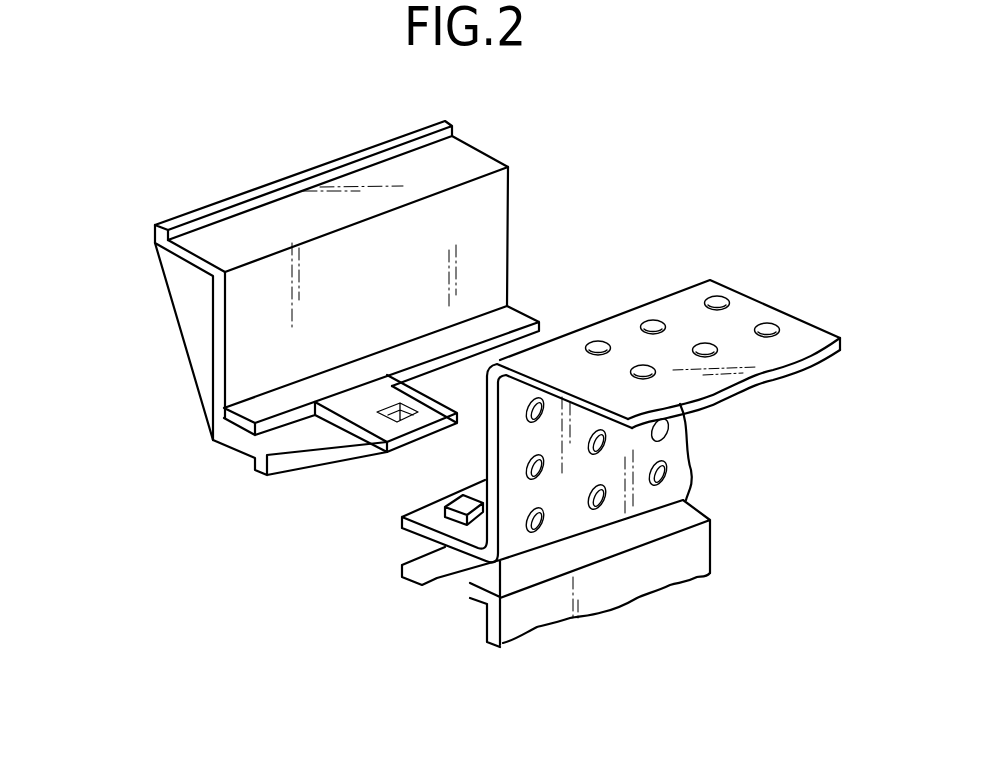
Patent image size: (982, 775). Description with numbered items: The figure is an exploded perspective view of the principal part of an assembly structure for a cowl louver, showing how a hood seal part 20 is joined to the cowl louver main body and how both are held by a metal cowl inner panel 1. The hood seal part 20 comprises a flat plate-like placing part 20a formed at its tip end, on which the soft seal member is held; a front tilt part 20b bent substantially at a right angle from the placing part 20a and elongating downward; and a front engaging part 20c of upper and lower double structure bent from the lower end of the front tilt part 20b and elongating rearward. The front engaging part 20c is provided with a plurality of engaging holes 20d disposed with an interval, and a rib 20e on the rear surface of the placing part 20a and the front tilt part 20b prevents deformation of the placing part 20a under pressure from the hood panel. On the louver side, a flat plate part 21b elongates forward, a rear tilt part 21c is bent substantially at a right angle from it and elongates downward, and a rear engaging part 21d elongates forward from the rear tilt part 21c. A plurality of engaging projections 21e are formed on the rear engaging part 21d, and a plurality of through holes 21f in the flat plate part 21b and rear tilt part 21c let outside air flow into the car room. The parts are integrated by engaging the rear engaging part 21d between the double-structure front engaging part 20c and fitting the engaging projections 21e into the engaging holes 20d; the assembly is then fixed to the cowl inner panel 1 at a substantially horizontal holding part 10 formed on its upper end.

The cowl inner panel 1 is at (695, 563).
The holding part 10 is at (683, 516).
The hood seal part 20 is at (245, 197).
The placing part 20a is at (423, 162).
The front tilt part 20b is at (498, 233).
The front engaging part 20c is at (260, 445).
The engaging holes 20d is at (380, 392).
The rib 20e is at (193, 332).
The flat plate part 21b is at (755, 310).
The rear tilt part 21c is at (577, 523).
The rear engaging part 21d is at (468, 532).
The engaging projections 21e is at (455, 500).
The through holes 21f is at (668, 478).